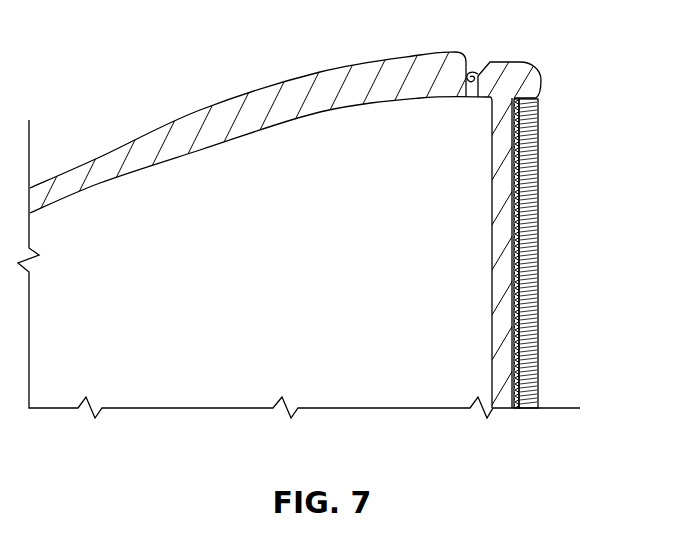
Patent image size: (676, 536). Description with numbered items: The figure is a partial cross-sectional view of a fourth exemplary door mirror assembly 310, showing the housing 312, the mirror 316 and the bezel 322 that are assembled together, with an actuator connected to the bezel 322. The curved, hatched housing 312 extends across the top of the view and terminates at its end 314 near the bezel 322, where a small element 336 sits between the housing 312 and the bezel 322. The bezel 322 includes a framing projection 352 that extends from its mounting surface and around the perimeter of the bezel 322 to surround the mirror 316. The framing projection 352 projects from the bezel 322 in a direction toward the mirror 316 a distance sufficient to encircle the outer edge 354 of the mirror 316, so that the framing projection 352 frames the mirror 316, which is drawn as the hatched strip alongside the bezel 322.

The door mirror assembly 310 is at (287, 122).
The housing 312 is at (286, 80).
The panel end edge 314 is at (466, 100).
The clip 336 is at (470, 73).
The framing projection 352 is at (543, 88).
The bezel 322 is at (492, 258).
The outer edge 354 is at (541, 112).
The mirror 316 is at (540, 287).